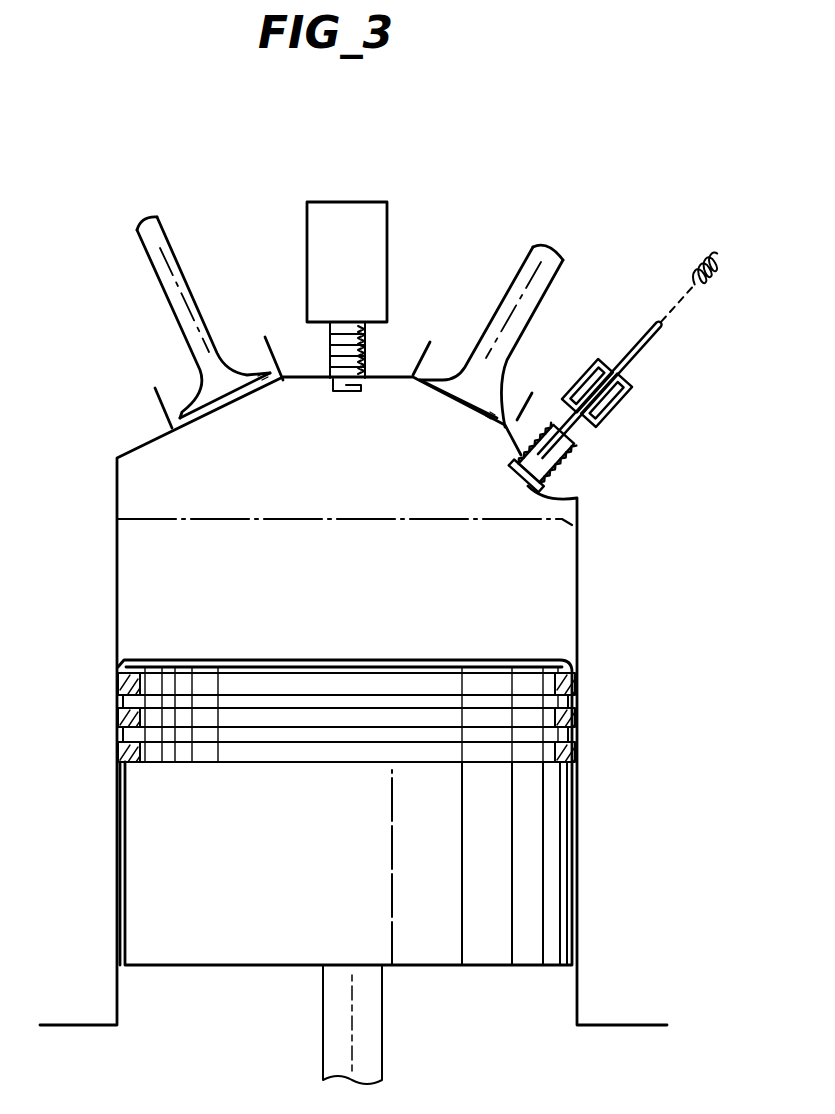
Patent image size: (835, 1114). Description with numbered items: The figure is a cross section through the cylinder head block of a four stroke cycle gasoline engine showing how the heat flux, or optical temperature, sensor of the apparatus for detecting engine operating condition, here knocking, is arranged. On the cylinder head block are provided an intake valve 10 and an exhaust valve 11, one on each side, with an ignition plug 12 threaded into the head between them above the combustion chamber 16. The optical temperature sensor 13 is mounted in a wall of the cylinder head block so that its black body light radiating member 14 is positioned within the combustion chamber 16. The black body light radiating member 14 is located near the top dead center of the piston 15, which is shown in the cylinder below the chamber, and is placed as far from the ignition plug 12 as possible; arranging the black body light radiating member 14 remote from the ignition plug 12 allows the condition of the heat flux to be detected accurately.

The intake valve 10 is at (180, 333).
The exhaust valve 11 is at (507, 384).
The ignition plug 12 is at (361, 202).
The optical temperature sensor 13 is at (648, 386).
The black body light radiating member 14 is at (577, 498).
The piston 15 is at (530, 877).
The combustion chamber 16 is at (354, 468).